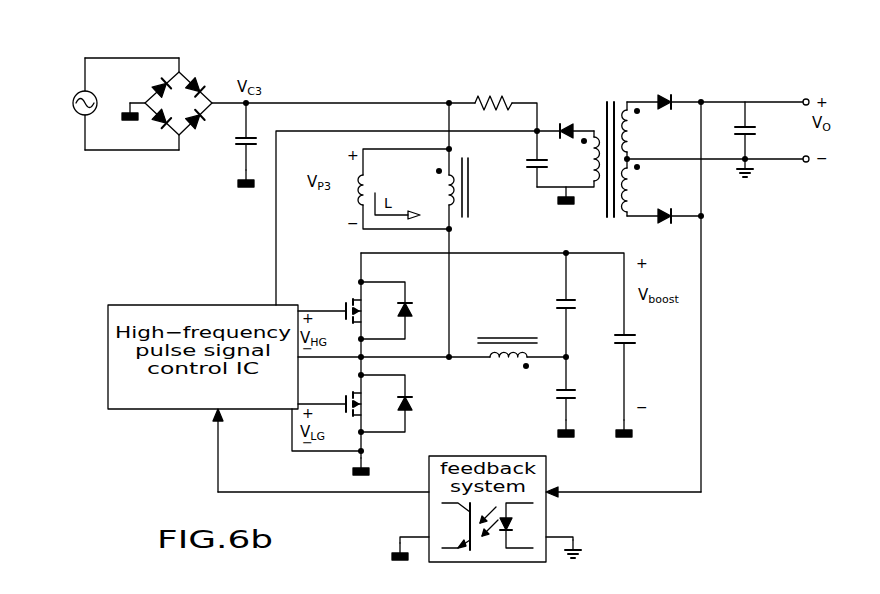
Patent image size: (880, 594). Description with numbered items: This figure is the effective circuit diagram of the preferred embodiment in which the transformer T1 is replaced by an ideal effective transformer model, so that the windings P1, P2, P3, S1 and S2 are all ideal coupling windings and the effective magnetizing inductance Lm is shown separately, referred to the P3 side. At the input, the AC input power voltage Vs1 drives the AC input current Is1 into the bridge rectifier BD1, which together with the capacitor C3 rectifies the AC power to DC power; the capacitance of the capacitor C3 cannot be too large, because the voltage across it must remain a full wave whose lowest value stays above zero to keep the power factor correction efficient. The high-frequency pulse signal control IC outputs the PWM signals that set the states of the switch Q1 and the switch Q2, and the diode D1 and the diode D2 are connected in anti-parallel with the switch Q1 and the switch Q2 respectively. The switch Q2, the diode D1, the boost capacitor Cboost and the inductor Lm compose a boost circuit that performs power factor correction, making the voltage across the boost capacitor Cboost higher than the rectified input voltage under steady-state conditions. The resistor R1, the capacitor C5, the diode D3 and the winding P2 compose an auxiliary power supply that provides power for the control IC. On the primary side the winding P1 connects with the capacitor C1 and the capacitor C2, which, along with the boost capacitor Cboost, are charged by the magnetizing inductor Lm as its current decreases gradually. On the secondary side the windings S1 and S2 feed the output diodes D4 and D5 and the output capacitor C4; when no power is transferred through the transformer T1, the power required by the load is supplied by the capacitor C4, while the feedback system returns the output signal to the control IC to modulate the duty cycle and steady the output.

The AC input power voltage Vs1 is at (106, 104).
The AC input current Is1 is at (102, 38).
The bridge rectifier BD1 is at (174, 87).
The capacitor C3 is at (226, 145).
The resistor R1 is at (493, 98).
The diode D3 is at (565, 116).
The capacitor C5 is at (524, 159).
The primary winding P2 is at (568, 167).
The transformer T1 is at (538, 208).
The secondary winding S1 is at (638, 130).
The secondary winding S2 is at (638, 187).
The output diode D4 is at (664, 88).
The output diode D5 is at (664, 229).
The output capacitor C4 is at (755, 139).
The primary winding P3 is at (429, 189).
The effective magnetizing inductance Lm is at (403, 189).
The switch Q1 is at (329, 298).
The diode D1 is at (397, 310).
The switch Q2 is at (329, 391).
The diode D2 is at (397, 403).
The primary winding P1 is at (528, 370).
The capacitor C1 is at (571, 305).
The capacitor C2 is at (571, 397).
The boost capacitor Cboost is at (648, 382).